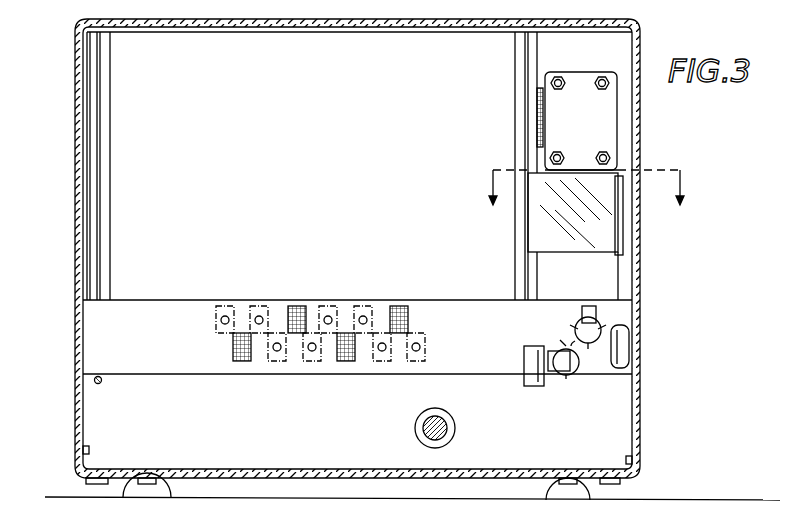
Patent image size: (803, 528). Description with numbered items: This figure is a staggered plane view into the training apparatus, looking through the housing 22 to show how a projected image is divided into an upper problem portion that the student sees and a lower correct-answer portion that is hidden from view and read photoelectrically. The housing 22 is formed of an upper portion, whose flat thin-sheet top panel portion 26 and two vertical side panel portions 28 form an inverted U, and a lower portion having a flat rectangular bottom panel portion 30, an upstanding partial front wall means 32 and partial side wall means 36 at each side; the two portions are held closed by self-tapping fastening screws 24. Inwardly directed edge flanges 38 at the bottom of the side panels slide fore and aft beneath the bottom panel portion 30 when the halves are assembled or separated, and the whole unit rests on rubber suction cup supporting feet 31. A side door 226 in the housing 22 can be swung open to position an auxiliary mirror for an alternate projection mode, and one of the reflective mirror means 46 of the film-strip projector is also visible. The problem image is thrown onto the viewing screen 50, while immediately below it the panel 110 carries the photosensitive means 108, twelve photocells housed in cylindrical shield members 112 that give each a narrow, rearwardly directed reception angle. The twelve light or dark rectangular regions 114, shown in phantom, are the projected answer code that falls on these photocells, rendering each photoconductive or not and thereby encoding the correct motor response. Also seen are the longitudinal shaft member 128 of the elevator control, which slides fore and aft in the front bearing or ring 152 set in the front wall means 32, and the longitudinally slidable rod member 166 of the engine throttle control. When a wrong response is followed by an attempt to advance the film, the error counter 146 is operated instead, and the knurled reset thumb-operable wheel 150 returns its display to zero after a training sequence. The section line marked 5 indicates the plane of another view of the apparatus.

The housing 22 is at (672, 134).
The self-tapping fastening screws 24 is at (78, 452).
The top panel portion 26 is at (624, 21).
The side panel portions 28 is at (640, 356).
The bottom panel portion 30 is at (332, 479).
The rubber suction cup supporting feet 31 is at (165, 493).
The front wall means 32 is at (355, 422).
The side wall means 36 is at (82, 324).
The edge flanges 38 is at (100, 485).
The reflective mirror means 46 is at (562, 186).
The projection or viewing screen 50 is at (312, 166).
The photosensitive means 108 is at (372, 309).
The panel 110 is at (357, 337).
The cylindrical shield members 112 is at (416, 351).
The projected light or dark regions 114 is at (258, 305).
The longitudinal shaft member 128 is at (447, 420).
The error counter 146 is at (618, 119).
The knurled reset thumb-operable wheel 150 is at (537, 114).
The front bearing or ring 152 is at (446, 438).
The rod member 166 is at (101, 383).
The side door 226 is at (636, 262).
The section line 5- 5 is at (575, 192).